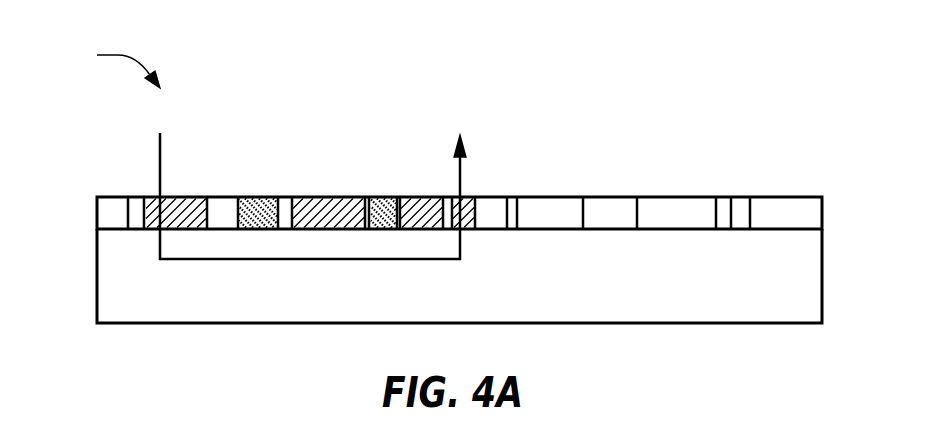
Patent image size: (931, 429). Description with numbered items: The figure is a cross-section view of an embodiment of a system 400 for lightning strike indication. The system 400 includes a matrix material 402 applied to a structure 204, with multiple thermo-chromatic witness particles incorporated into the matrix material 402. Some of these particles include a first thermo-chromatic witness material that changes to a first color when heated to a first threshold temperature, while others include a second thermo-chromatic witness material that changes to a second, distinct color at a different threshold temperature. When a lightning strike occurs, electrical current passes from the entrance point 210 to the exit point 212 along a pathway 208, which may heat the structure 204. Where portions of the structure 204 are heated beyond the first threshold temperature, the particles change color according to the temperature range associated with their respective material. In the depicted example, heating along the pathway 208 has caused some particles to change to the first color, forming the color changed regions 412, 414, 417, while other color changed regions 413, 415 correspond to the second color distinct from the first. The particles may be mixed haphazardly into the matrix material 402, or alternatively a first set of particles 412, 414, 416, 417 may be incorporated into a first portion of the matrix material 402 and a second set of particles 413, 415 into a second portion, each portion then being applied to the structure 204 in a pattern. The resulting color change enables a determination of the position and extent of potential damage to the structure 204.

The system for lightning strike indication 400 is at (108, 66).
The structure 204 is at (97, 255).
The matrix material 402 is at (113, 197).
The pathway 208 is at (218, 259).
The entrance point 210 is at (153, 197).
The exit point 212 is at (464, 197).
The color changed region 412 is at (172, 197).
The color changed region 413 is at (252, 197).
The color changed region 414 is at (323, 197).
The color changed region 415 is at (382, 229).
The first set of particles 416 is at (432, 197).
The color changed region 417 is at (467, 229).